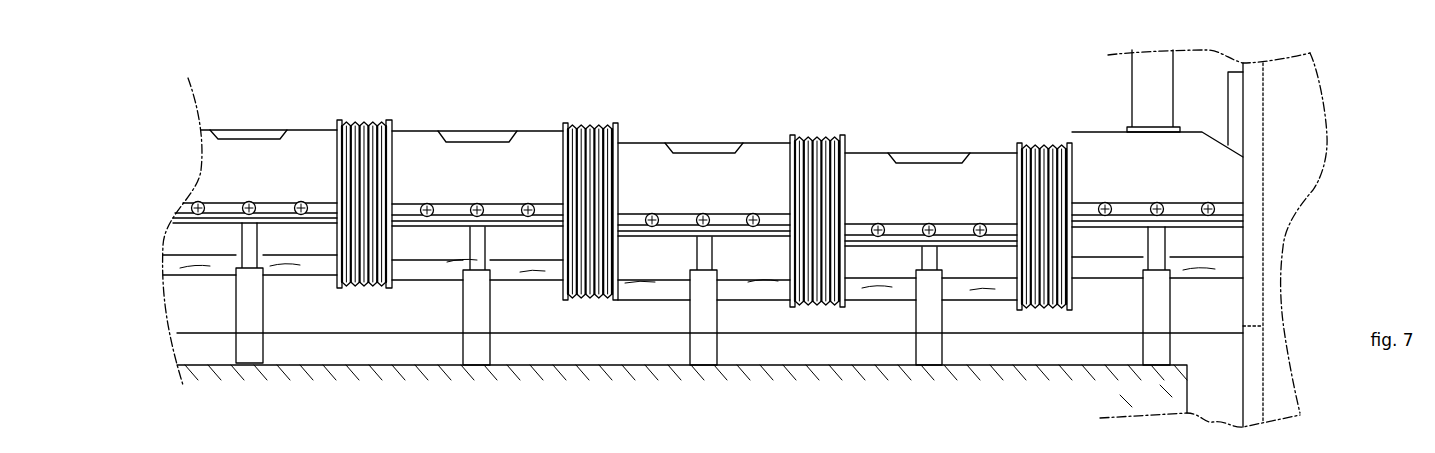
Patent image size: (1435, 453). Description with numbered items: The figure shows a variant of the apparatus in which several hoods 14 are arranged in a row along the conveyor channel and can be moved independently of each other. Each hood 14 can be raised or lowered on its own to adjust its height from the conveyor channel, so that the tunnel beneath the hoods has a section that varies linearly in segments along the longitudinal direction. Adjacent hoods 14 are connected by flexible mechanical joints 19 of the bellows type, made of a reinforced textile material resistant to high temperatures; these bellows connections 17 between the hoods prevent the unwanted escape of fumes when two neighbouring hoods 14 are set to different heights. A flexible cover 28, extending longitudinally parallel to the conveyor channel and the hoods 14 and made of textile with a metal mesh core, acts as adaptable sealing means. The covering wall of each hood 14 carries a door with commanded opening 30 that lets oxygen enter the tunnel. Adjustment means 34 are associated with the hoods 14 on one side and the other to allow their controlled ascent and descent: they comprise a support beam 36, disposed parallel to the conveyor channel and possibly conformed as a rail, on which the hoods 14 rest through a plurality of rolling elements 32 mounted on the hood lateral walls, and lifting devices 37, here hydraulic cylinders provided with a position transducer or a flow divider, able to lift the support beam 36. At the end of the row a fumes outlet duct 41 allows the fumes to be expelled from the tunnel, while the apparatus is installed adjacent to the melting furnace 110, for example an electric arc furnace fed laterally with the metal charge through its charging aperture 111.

The hood 14 is at (218, 110).
The bellows 17 is at (694, 176).
The flexible mechanical joint 19 is at (333, 110).
The flexible cover 28 is at (777, 283).
The door with commanded opening 30 is at (250, 135).
The rolling element 32 is at (249, 205).
The adjustment means 34 is at (263, 347).
The support beam 36 is at (225, 220).
The lifting device 37 is at (246, 340).
The fumes outlet duct 41 is at (1152, 79).
The melting furnace 110 is at (1262, 238).
The charging aperture 111 is at (1253, 130).